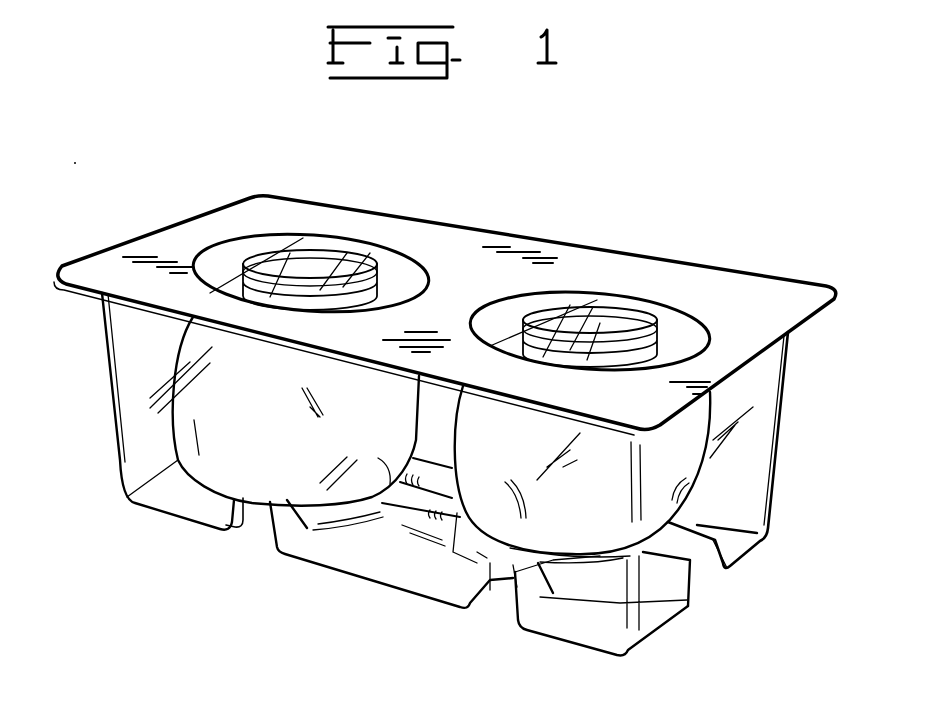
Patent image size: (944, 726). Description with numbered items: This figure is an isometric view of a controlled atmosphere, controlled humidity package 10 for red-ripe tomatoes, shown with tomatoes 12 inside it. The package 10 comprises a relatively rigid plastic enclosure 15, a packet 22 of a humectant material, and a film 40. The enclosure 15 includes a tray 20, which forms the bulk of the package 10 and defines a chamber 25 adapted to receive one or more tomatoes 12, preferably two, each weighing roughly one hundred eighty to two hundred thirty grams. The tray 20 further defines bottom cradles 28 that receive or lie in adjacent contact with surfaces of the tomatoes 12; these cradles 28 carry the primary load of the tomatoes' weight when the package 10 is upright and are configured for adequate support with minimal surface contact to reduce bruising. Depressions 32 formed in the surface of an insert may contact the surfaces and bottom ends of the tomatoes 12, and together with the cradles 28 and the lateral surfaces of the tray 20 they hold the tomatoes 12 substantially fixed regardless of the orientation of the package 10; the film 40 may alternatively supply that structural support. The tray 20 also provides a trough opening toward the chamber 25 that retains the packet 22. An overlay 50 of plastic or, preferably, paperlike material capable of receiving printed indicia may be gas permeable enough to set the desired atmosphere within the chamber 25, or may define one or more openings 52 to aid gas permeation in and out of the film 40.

The controlled atmosphere, controlled humidity package 10 is at (624, 206).
The tomatoes 12 is at (233, 390).
The plastic enclosure 15 is at (788, 362).
The tray 20 is at (120, 455).
The packet 22 is at (413, 500).
The chamber 25 is at (438, 432).
The bottom cradles 28 is at (580, 562).
The depressions 32 is at (267, 240).
The film 40 is at (217, 260).
The overlay 50 is at (156, 247).
The openings 52 is at (382, 240).